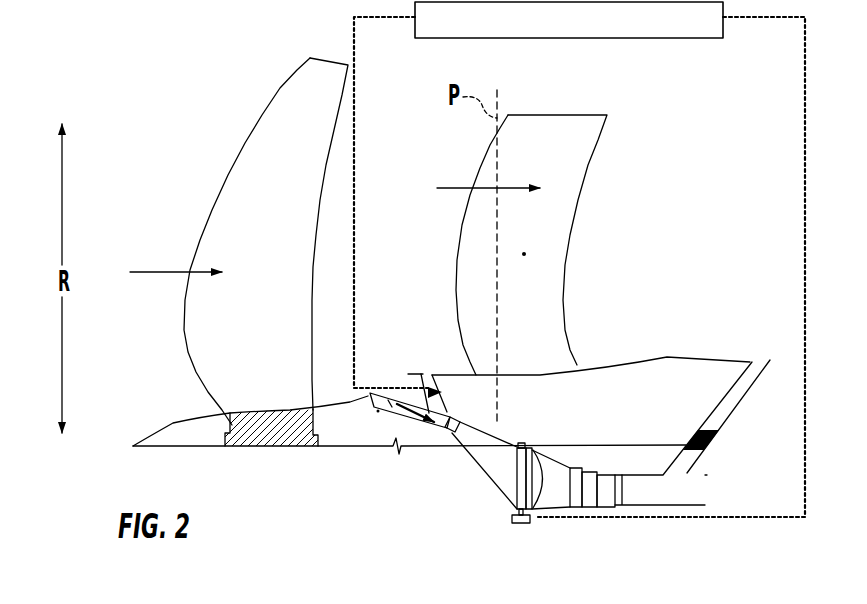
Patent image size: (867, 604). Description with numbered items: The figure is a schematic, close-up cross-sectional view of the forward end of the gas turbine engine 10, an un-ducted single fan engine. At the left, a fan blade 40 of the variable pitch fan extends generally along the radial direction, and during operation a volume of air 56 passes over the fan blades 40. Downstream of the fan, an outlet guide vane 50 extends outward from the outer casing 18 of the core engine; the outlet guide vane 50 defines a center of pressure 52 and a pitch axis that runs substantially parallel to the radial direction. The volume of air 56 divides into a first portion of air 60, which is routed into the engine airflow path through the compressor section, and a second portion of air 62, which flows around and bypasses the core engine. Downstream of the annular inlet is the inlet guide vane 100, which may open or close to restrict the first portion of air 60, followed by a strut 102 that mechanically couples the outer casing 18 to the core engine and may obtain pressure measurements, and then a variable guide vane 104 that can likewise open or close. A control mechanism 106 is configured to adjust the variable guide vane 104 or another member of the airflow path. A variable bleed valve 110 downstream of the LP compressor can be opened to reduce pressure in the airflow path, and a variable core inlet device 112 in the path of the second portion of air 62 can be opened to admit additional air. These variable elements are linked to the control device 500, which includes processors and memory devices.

The gas turbine engine 10 is at (143, 125).
The outer casing 18 is at (648, 368).
The fan blades 40 is at (244, 148).
The outlet guide vanes 50 is at (564, 114).
The center of pressure 52 is at (524, 254).
The volume of air 56 is at (150, 271).
The first portion of air 60 is at (410, 400).
The second portion of air 62 is at (460, 187).
The inlet guide vane 100 is at (378, 416).
The strut 102 is at (444, 443).
The variable guide vane 104 is at (538, 482).
The control mechanism 106 is at (522, 527).
The variable bleed valve 110 is at (722, 438).
The variable core inlet device 112 is at (446, 376).
The control device 500 is at (700, 31).